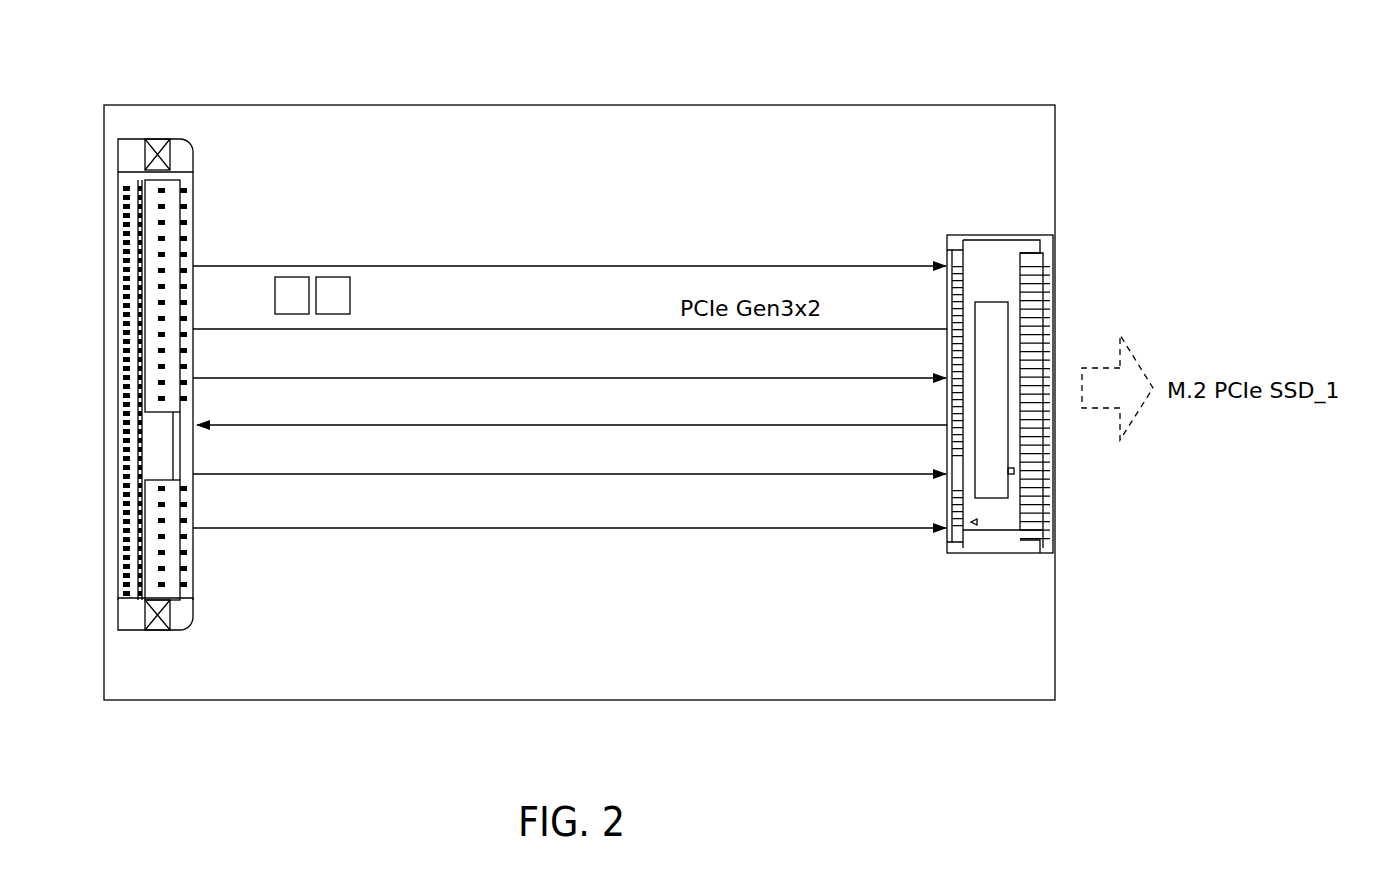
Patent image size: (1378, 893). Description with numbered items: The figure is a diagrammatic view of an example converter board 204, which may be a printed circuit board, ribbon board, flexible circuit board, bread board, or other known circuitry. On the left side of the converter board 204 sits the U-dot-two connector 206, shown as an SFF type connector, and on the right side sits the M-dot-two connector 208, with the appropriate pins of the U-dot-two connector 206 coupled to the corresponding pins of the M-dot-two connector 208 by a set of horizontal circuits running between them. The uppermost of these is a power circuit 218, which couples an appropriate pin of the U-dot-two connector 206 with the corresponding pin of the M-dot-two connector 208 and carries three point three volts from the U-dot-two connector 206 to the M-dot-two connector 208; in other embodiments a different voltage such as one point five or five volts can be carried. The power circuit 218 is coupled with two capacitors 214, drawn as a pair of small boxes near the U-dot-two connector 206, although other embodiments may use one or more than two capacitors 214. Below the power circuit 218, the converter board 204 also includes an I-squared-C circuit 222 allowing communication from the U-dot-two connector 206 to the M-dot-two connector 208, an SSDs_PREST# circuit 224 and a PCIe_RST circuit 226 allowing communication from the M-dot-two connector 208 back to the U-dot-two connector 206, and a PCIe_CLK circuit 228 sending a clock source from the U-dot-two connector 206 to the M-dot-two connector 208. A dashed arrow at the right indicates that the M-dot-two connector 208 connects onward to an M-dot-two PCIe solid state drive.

The converter board 204 is at (653, 104).
The U.2 connector 206 is at (158, 138).
The M.2 connector 208 is at (1010, 235).
The capacitors 214 is at (333, 288).
The power circuit 218 is at (678, 265).
The I2C circuit 222 is at (526, 378).
The SSDs_PREST# circuit 224 is at (406, 425).
The PCIe_RST circuit 226 is at (555, 474).
The PCIe_CLK circuit 228 is at (770, 530).